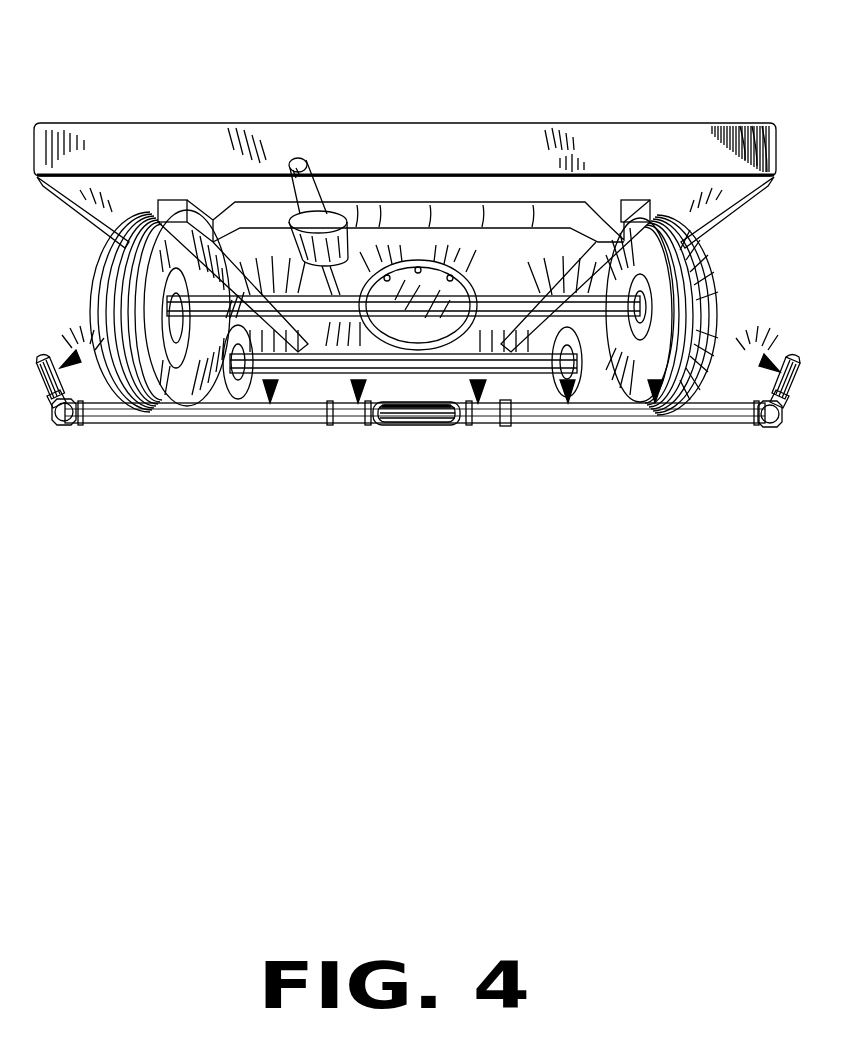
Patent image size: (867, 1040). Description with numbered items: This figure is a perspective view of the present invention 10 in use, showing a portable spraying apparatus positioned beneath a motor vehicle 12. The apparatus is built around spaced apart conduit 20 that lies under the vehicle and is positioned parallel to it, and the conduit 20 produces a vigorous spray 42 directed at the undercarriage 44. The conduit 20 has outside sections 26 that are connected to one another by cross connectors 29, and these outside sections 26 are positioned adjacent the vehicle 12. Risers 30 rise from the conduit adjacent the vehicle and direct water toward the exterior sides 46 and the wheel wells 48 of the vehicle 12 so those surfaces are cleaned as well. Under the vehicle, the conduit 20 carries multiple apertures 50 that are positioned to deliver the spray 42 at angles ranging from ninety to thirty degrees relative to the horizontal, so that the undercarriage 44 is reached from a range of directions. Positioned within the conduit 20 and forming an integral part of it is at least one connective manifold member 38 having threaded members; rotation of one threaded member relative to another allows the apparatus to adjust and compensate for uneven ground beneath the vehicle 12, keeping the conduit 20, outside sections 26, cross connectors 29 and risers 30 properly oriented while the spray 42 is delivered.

The present invention 10 is at (200, 527).
The motor vehicle 12 is at (72, 132).
The conduit 20 is at (609, 427).
The outside sections 26 is at (63, 422).
The cross connectors 29 is at (247, 424).
The risers 30 is at (38, 405).
The connective manifold member 38 is at (414, 424).
The spray 42 is at (84, 338).
The undercarriage 44 is at (107, 190).
The exterior sides 46 is at (773, 147).
The wheel wells 48 is at (737, 243).
The apertures 50 is at (786, 357).